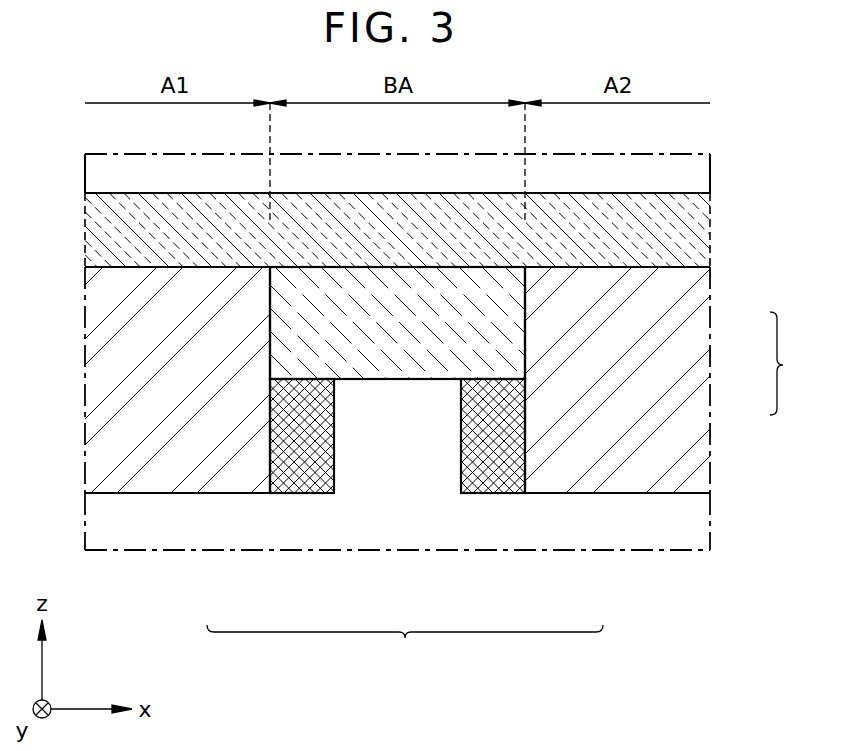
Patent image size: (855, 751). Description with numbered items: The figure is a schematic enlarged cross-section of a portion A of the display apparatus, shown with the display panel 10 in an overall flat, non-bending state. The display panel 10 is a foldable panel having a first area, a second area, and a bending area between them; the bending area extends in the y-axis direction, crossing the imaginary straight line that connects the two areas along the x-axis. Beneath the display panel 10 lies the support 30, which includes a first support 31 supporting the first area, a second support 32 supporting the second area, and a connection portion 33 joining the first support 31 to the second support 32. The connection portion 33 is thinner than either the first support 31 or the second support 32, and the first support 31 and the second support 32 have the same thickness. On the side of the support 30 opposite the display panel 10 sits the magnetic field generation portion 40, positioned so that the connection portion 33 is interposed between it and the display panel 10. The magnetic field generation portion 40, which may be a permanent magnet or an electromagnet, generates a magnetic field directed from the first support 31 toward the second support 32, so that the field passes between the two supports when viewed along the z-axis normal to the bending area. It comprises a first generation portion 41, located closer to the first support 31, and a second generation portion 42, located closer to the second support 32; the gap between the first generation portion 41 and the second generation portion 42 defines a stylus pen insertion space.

The portion A is at (710, 173).
The display panel 10 is at (688, 233).
The support 30 is at (405, 646).
The first support 31 is at (224, 467).
The second support 32 is at (590, 467).
The connection portion 33 is at (403, 330).
The magnetic field generation portion 40 is at (792, 363).
The first generation portion 41 is at (300, 407).
The second generation portion 42 is at (500, 422).